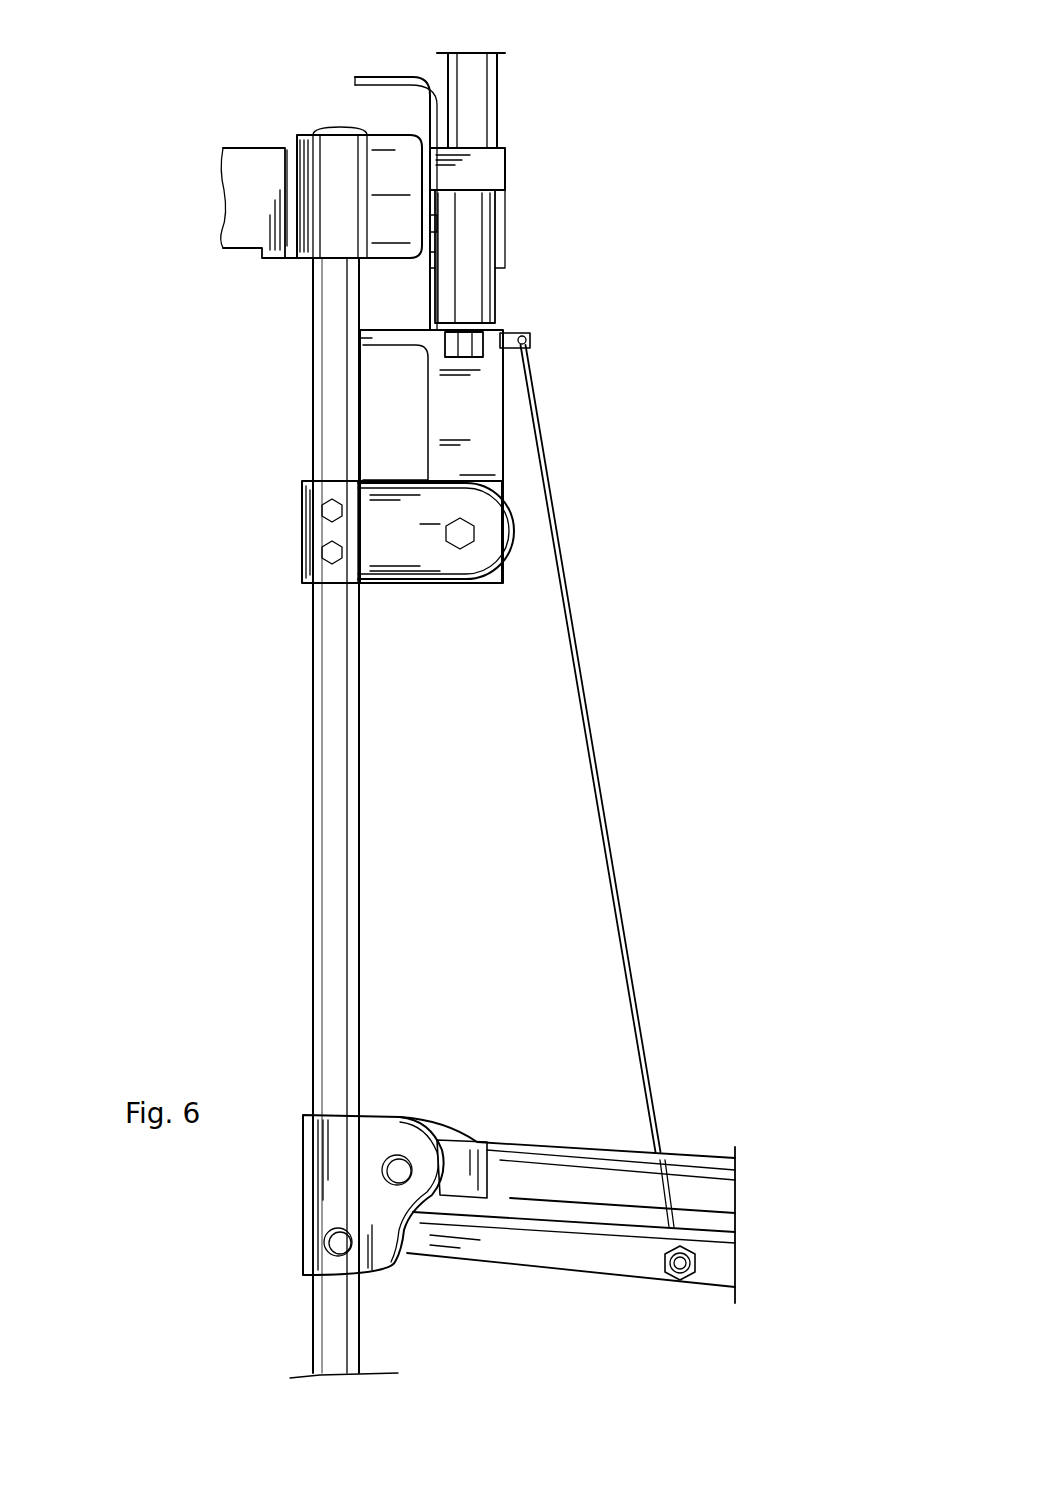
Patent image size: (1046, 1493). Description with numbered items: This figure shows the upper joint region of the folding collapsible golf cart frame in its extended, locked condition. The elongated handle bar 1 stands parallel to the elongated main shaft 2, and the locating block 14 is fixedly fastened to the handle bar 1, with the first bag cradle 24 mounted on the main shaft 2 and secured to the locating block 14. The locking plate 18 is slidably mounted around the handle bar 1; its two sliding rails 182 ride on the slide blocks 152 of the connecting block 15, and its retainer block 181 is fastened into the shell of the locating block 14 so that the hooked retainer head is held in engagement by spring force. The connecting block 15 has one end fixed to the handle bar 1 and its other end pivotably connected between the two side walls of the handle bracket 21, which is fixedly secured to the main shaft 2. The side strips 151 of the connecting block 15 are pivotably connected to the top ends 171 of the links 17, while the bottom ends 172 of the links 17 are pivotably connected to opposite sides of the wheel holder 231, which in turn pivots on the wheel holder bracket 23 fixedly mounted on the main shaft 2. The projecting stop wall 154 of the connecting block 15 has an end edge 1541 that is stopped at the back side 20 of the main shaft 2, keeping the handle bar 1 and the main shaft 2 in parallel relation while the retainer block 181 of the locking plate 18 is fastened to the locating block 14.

The handle bar 1 is at (500, 82).
The main shaft 2 is at (360, 790).
The locating block 14 is at (387, 133).
The connecting block 15 is at (505, 445).
The links 17 is at (582, 640).
The locking plate 18 is at (507, 168).
The back side of the main shaft 20 is at (357, 340).
The handle bracket 21 is at (437, 587).
The wheel holder bracket 23 is at (380, 1123).
The first bag cradle 24 is at (243, 147).
The side strips 151 is at (530, 333).
The slide blocks 152 is at (483, 345).
The projecting stop wall 154 is at (390, 352).
The top ends of the links 171 is at (526, 346).
The bottom ends of the links 172 is at (675, 1228).
The retainer block 181 is at (427, 228).
The sliding rails 182 is at (492, 300).
The wheel holder 231 is at (566, 1262).
The end edge of the projecting stop wall 1541 is at (360, 332).